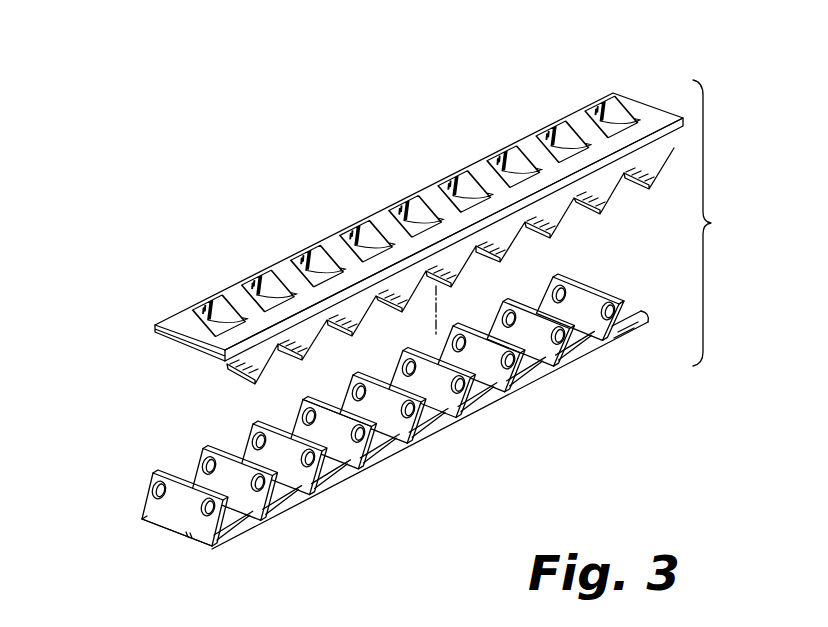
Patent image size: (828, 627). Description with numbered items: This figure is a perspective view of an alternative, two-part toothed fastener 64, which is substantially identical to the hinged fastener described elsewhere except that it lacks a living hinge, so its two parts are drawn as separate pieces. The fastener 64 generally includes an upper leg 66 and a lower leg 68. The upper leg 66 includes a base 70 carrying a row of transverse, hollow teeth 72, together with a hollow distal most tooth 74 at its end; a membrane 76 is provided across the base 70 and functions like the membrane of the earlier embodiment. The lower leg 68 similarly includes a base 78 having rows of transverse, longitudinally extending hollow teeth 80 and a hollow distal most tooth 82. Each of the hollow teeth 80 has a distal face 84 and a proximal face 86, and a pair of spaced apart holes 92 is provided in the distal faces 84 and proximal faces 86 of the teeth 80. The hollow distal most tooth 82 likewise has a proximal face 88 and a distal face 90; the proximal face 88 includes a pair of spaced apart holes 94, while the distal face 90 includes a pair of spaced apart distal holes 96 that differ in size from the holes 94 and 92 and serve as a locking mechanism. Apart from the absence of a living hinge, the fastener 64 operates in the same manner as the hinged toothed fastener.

The two-part toothed fastener 64 is at (735, 215).
The upper leg 66 is at (151, 306).
The lower leg 68 is at (118, 458).
The base 70 is at (151, 338).
The hollow teeth 72 is at (556, 214).
The hollow distal most tooth 74 is at (657, 157).
The membrane 76 is at (575, 116).
The base 78 is at (147, 523).
The hollow teeth 80 is at (403, 442).
The hollow distal most tooth 82 is at (627, 320).
The distal face 84 is at (487, 373).
The proximal face 86 is at (175, 507).
The proximal face 88 is at (578, 312).
The distal face 90 is at (632, 315).
The holes 92 is at (153, 489).
The holes 94 is at (587, 342).
The distal holes 96 is at (622, 291).